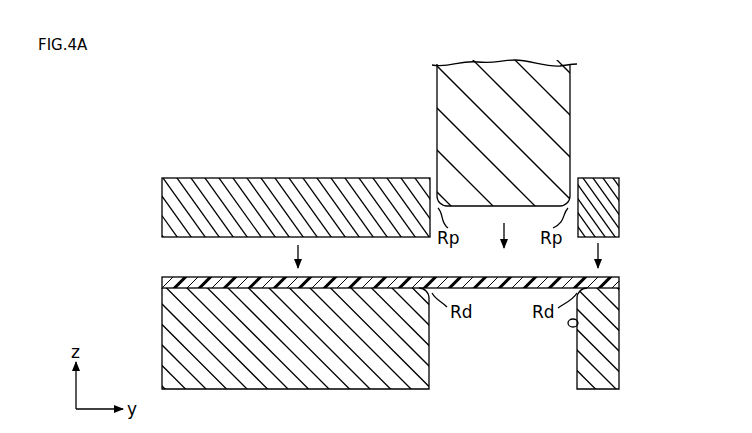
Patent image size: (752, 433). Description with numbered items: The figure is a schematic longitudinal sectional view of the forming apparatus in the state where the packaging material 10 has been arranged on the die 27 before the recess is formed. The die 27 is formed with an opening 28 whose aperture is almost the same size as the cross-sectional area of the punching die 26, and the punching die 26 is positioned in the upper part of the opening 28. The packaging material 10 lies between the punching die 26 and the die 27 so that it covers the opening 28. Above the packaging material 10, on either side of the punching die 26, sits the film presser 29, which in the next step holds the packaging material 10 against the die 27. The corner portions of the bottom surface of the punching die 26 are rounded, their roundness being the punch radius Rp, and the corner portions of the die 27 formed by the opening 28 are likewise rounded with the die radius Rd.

The packaging material 10 is at (622, 282).
The punching die 26 is at (563, 133).
The die 27 is at (427, 343).
The opening 28 is at (578, 325).
The film presser 29 is at (343, 184).